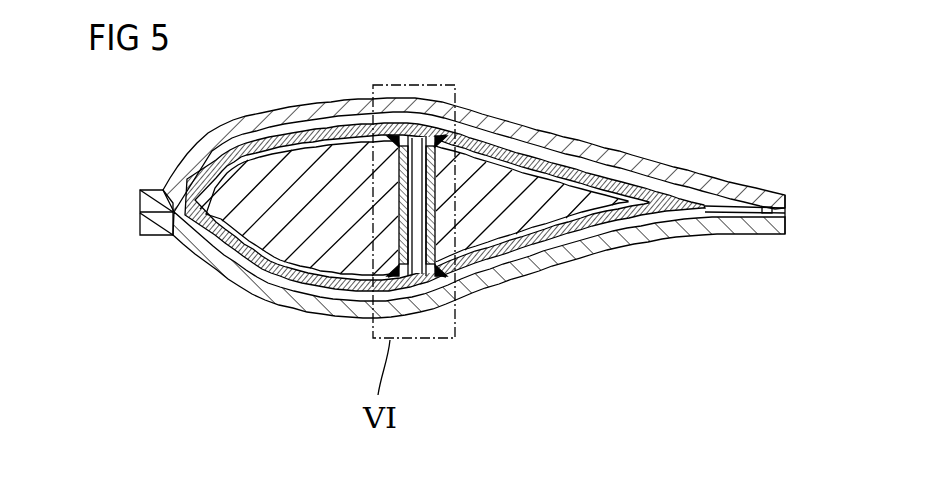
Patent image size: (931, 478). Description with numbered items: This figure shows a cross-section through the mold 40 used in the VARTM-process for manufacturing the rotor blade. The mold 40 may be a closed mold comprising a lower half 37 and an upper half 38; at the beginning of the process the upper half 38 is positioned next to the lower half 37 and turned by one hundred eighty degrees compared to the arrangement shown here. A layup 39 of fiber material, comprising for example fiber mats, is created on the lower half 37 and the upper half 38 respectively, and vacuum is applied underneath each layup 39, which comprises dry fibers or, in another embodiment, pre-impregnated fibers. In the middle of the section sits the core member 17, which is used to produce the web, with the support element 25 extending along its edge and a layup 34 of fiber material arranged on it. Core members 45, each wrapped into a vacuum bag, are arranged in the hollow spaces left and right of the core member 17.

The core member 17 is at (380, 218).
The support element 25 is at (421, 278).
The layup of fiber material 34 is at (402, 172).
The lower half 37 is at (637, 233).
The upper half 38 is at (624, 160).
The layup of fiber material 39 is at (543, 163).
The mold 40 is at (736, 259).
The core members 45 is at (268, 162).